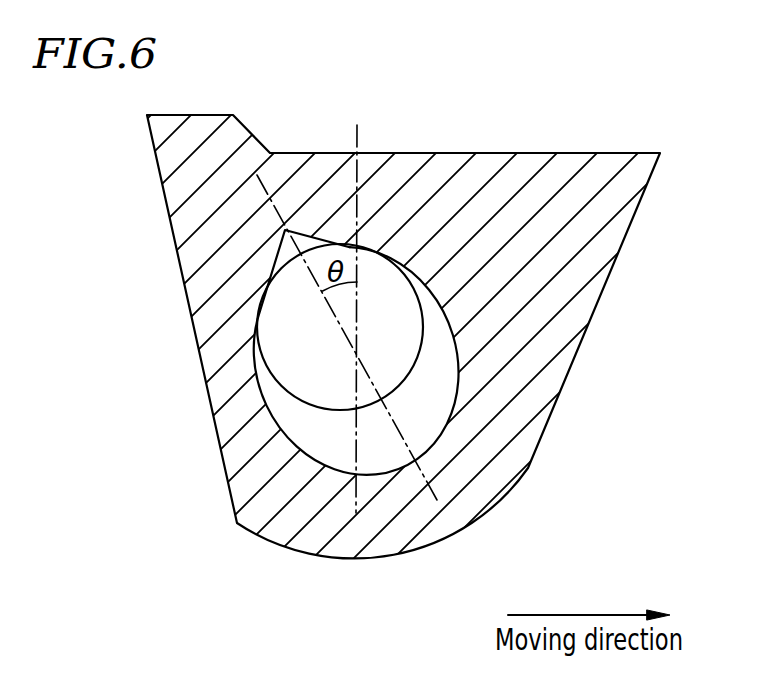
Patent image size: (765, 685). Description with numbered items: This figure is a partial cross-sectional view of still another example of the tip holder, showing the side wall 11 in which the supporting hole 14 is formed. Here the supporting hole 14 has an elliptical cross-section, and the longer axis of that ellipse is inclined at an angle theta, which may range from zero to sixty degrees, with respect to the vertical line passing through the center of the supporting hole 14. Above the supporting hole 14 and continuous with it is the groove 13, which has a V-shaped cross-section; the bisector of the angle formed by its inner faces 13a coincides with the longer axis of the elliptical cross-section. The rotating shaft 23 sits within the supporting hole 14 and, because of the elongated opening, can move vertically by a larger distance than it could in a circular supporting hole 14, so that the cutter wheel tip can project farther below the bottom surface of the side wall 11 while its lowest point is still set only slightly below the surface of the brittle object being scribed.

The side wall 11 is at (562, 360).
The groove 13 is at (283, 231).
The inner faces 13a is at (315, 236).
The supporting hole 14 is at (425, 418).
The rotating shaft 23 is at (277, 357).